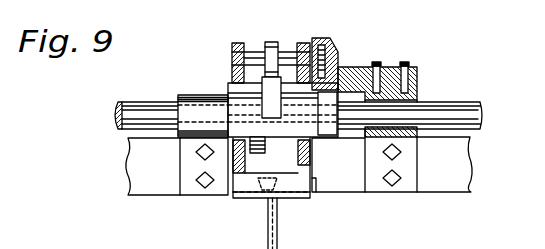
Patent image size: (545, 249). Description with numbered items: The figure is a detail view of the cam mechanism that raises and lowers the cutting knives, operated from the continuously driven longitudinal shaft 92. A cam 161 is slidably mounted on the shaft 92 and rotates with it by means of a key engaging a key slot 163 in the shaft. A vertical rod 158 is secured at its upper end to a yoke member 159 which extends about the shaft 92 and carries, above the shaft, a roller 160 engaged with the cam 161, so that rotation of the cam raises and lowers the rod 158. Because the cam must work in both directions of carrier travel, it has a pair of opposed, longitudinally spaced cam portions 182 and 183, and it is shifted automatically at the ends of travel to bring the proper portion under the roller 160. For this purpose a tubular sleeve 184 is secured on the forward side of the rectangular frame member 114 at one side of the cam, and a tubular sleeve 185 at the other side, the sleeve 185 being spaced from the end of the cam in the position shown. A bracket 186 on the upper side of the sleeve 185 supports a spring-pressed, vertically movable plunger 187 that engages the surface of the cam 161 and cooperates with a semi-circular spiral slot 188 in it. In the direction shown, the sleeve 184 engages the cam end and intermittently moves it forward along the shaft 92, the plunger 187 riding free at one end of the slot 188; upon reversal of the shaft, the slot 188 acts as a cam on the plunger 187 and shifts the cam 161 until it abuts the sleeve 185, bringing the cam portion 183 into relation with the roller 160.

The shaft 92 is at (147, 108).
The rectangular frame member 114 is at (347, 186).
The vertical rod 158 is at (268, 231).
The yoke member 159 is at (252, 196).
The roller 160 is at (299, 31).
The cam 161 is at (230, 92).
The key slot 163 is at (118, 117).
The cam portion 182 is at (304, 114).
The cam portion 183 is at (257, 147).
The tubular sleeve 184 is at (201, 141).
The tubular sleeve 185 is at (408, 152).
The bracket 186 is at (337, 68).
The plunger 187 is at (362, 68).
The semi-circular spiral slot 188 is at (318, 108).